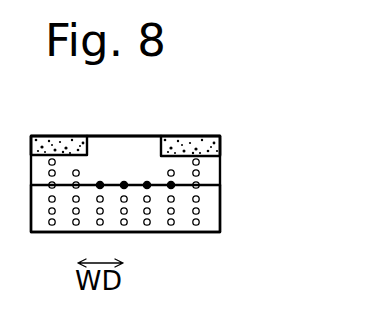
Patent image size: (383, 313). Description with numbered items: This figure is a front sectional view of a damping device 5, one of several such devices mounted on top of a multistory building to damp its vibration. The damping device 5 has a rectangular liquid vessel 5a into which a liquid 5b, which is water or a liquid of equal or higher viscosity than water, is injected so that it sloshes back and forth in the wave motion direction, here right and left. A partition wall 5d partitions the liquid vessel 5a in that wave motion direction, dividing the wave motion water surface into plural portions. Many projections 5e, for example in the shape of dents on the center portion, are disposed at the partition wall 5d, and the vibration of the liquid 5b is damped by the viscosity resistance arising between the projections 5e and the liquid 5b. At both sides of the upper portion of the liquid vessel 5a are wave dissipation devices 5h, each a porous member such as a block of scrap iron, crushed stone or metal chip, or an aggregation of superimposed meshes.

The damping device 5 is at (254, 134).
The liquid vessel 5a is at (207, 185).
The liquid 5b is at (222, 167).
The partition wall 5d is at (144, 148).
The projections 5e is at (77, 172).
The wave dissipation device 5h is at (45, 135).